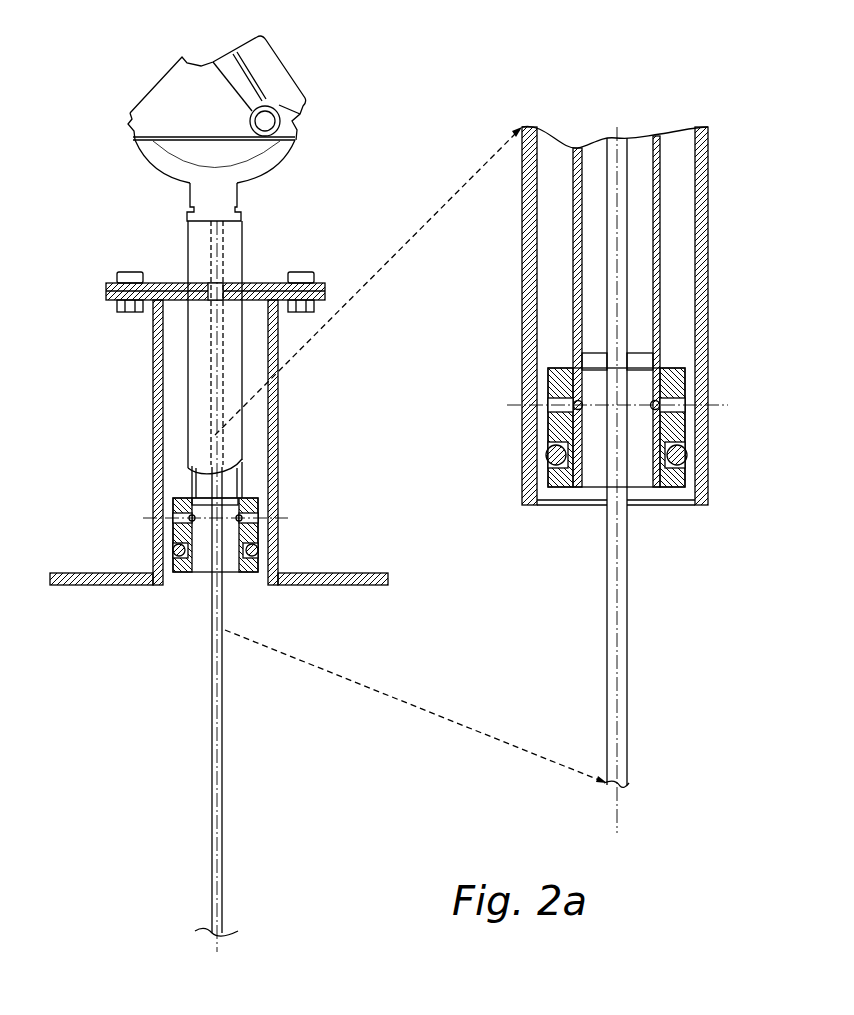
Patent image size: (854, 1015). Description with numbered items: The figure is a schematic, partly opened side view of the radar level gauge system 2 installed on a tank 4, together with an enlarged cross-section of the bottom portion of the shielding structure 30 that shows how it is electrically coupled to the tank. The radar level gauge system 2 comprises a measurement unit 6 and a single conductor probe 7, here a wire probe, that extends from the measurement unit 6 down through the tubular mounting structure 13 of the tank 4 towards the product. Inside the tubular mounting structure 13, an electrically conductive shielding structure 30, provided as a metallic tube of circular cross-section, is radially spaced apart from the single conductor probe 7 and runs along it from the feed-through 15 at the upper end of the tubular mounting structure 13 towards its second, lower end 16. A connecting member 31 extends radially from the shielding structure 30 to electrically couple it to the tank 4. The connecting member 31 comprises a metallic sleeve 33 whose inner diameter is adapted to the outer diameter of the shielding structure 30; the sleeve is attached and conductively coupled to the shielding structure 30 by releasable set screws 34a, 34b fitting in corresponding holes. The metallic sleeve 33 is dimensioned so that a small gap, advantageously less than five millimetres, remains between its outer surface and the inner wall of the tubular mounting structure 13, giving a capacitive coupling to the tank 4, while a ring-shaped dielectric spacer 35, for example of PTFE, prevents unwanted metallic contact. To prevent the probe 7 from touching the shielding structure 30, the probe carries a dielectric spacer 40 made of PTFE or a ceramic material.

The radar level gauge system 2 is at (92, 76).
The tank 4 is at (357, 573).
The measurement unit 6 is at (210, 63).
The single conductor probe 7 is at (222, 747).
The tubular mounting structure 13 is at (153, 403).
The feed-through 15 is at (228, 274).
The second, lower end 16 is at (267, 583).
The shielding structure 30 is at (243, 438).
The connecting member 31 is at (266, 505).
The metallic sleeve 33 is at (555, 427).
The set screw 34a is at (552, 400).
The set screw 34b is at (680, 403).
The ring-shaped spacer 35 is at (545, 455).
The spacer 40 is at (190, 491).